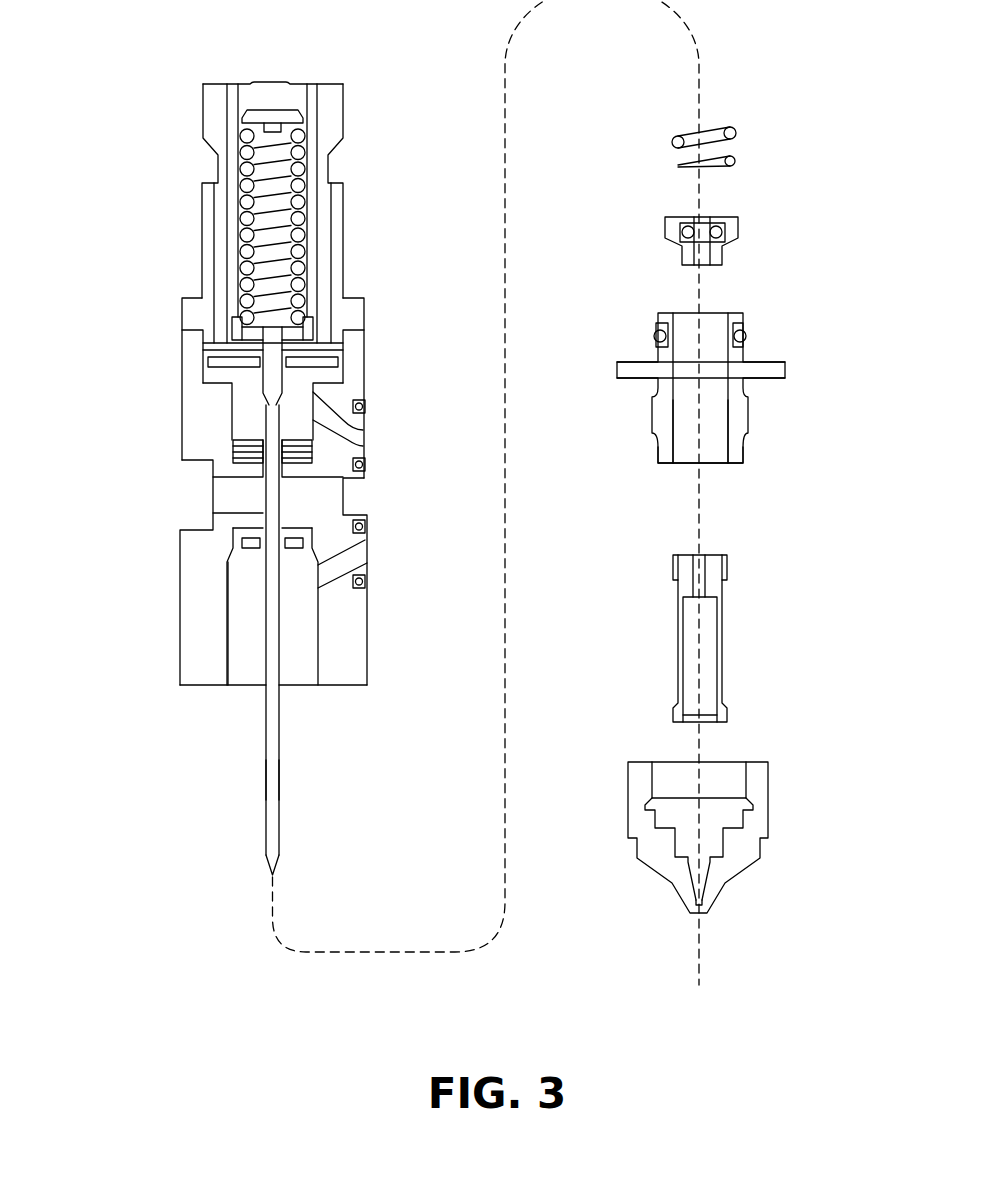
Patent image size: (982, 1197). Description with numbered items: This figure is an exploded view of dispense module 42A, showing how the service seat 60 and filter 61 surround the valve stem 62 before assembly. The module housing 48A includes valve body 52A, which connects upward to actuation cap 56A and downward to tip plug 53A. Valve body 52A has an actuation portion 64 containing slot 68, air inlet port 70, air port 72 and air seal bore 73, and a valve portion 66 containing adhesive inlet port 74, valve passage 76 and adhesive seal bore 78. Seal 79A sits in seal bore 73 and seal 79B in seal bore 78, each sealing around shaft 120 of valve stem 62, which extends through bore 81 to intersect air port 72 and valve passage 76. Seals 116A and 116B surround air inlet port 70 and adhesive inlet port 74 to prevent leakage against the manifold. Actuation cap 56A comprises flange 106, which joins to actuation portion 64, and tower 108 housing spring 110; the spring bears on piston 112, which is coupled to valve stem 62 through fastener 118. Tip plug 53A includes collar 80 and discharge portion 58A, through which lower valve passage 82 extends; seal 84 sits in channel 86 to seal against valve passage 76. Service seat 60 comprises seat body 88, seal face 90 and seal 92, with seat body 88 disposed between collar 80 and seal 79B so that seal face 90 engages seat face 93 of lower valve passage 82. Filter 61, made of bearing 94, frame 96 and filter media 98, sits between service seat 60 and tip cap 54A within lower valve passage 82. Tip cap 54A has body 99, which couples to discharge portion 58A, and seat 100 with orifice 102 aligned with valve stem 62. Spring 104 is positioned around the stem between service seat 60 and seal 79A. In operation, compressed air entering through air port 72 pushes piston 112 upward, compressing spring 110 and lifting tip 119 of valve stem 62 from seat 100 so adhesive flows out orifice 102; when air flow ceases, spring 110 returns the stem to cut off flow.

The dispense module 42A is at (152, 127).
The actuation cap 56A is at (344, 99).
The tower 108 is at (337, 223).
The spring 110 is at (258, 248).
The flange 106 is at (355, 312).
The fastener 118 is at (270, 330).
The actuation portion 64 is at (176, 366).
The module housing 48A is at (120, 356).
The piston 112 is at (327, 350).
The air port 72 is at (240, 414).
The seal 116A is at (367, 403).
The air inlet port 70 is at (364, 440).
The air seal bore 73 is at (365, 463).
The seal 79A is at (234, 451).
The slot 68 is at (210, 463).
The bore 81 is at (280, 497).
The adhesive seal bore 78 is at (303, 530).
The valve body 52A is at (150, 516).
The seal 79B is at (232, 536).
The adhesive inlet port 74 is at (338, 566).
The seal 116B is at (368, 580).
The valve passage 76 is at (229, 636).
The valve portion 66 is at (199, 680).
The valve stem 62 is at (287, 758).
The shaft 120 is at (272, 803).
The tip 119 is at (272, 870).
The spring 104 is at (722, 132).
The seal 92 is at (715, 217).
The seat body 88 is at (660, 224).
The service seat 60 is at (747, 224).
The seal face 90 is at (727, 243).
The seat face 93 is at (673, 316).
The collar 80 is at (743, 313).
The channel 86 is at (661, 323).
The seal 84 is at (745, 333).
The tip plug 53A is at (779, 348).
The discharge portion 58A is at (745, 453).
The lower valve passage 82 is at (677, 422).
The bearing 94 is at (713, 570).
The filter 61 is at (757, 588).
The filter media 98 is at (692, 635).
The frame 96 is at (722, 710).
The body 99 is at (640, 790).
The tip cap 54A is at (788, 811).
The seat 100 is at (694, 898).
The orifice 102 is at (700, 918).